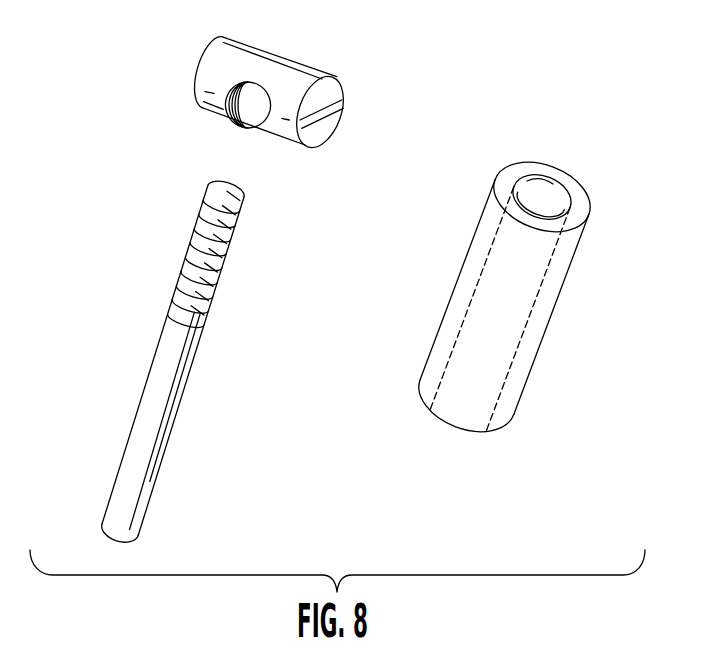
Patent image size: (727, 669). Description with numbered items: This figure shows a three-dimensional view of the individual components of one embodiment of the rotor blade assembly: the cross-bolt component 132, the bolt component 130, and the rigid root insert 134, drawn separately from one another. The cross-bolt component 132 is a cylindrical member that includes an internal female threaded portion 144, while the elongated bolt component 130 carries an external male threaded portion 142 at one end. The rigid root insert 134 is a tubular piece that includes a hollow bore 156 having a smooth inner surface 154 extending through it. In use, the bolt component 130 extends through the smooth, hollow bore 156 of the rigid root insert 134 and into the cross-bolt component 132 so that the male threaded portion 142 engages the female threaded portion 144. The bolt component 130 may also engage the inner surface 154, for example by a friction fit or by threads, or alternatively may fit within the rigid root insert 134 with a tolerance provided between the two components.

The bolt component 130 is at (152, 417).
The cross-bolt component 132 is at (295, 78).
The rigid root insert 134 is at (543, 337).
The male threaded portion 142 is at (222, 270).
The female threaded portion 144 is at (238, 119).
The inner surface 154 is at (553, 185).
The hollow bore 156 is at (482, 352).